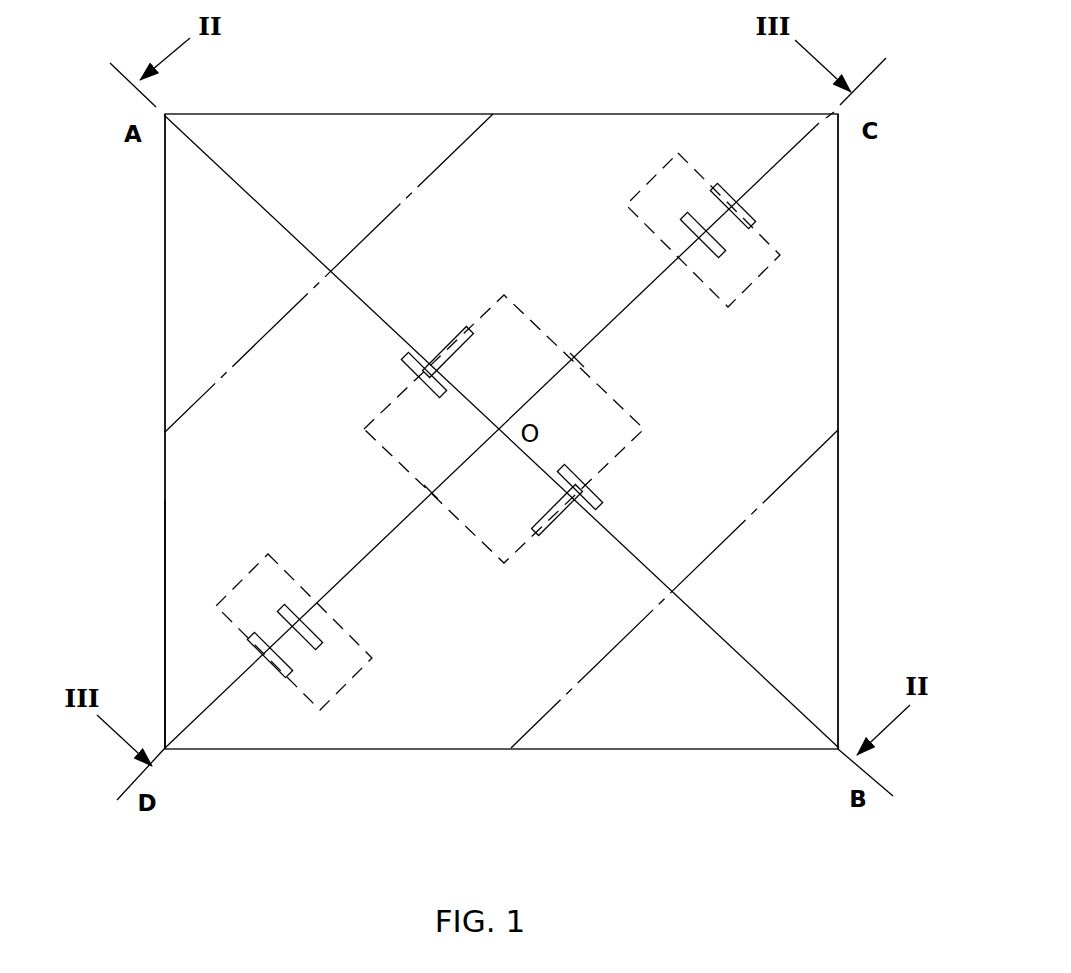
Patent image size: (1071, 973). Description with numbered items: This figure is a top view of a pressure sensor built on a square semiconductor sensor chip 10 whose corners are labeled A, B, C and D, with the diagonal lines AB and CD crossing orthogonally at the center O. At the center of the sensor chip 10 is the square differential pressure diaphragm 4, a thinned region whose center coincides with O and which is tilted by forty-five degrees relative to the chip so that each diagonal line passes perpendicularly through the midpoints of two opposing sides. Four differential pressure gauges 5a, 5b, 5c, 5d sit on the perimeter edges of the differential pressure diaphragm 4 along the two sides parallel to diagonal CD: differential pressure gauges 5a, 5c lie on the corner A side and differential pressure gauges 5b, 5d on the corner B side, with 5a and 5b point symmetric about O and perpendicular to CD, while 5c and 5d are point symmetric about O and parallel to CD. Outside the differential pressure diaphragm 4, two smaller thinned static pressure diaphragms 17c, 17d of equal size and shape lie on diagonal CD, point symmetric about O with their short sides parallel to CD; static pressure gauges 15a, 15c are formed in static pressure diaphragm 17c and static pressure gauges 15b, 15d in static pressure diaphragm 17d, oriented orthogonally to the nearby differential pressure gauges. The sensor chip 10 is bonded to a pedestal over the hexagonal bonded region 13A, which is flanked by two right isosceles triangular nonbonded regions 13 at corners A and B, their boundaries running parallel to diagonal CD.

The sensor chip 10 is at (840, 369).
The nonbonded region 13 is at (168, 262).
The bonded region 13A is at (168, 578).
The differential pressure diaphragm 4 is at (631, 447).
The differential pressure gauge 5a is at (405, 361).
The differential pressure gauge 5b is at (606, 508).
The differential pressure gauge 5c is at (459, 328).
The differential pressure gauge 5d is at (565, 528).
The static pressure gauge 15a is at (755, 207).
The static pressure gauge 15b is at (290, 674).
The static pressure gauge 15c is at (720, 255).
The static pressure gauge 15d is at (320, 643).
The static pressure diaphragm 17c is at (636, 203).
The static pressure diaphragm 17d is at (236, 585).